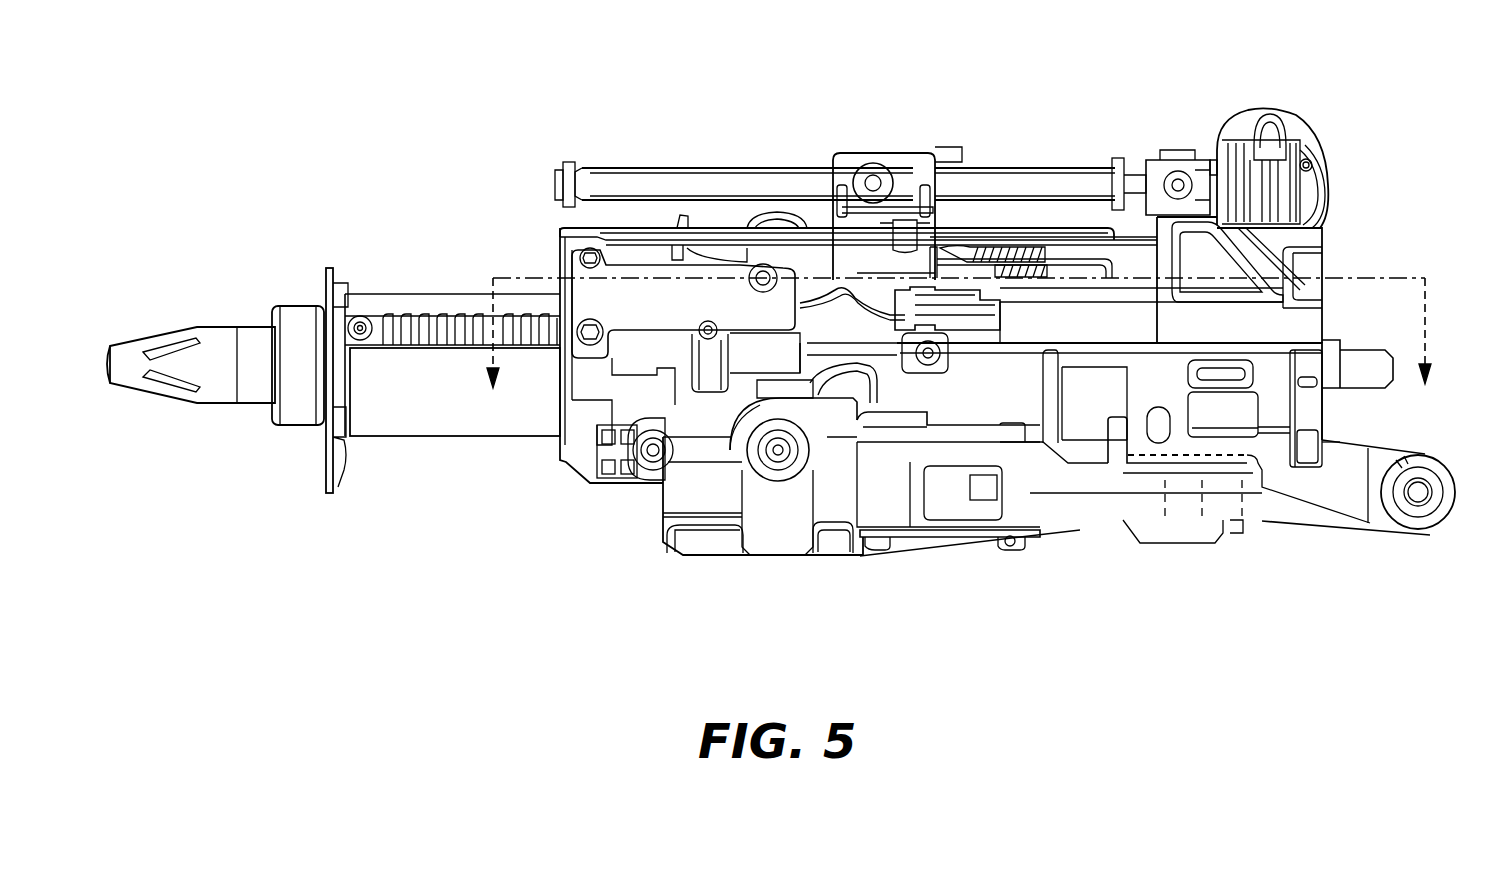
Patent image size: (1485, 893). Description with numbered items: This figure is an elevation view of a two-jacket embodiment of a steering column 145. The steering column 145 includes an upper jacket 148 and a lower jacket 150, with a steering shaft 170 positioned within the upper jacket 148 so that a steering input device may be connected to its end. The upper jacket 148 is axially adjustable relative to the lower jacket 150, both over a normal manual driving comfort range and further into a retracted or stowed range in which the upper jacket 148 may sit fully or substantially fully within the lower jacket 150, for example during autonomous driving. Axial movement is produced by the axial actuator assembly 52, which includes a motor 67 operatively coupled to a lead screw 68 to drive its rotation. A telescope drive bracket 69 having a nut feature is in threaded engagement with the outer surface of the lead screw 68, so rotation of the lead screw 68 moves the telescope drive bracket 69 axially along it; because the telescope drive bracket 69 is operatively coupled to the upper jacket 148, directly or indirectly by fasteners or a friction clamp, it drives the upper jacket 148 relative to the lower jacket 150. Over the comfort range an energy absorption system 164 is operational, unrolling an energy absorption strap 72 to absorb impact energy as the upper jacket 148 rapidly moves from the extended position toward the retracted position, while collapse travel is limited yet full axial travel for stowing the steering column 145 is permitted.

The axial actuator assembly 52 is at (768, 130).
The motor 67 is at (1243, 125).
The lead screw 68 is at (1005, 187).
The telescope drive bracket 69 is at (904, 185).
The energy absorption strap 72 is at (1075, 262).
The steering column 145 is at (460, 228).
The upper jacket 148 is at (423, 400).
The lower jacket 150 is at (1075, 323).
The energy absorption system 164 is at (548, 293).
The steering shaft 170 is at (223, 340).